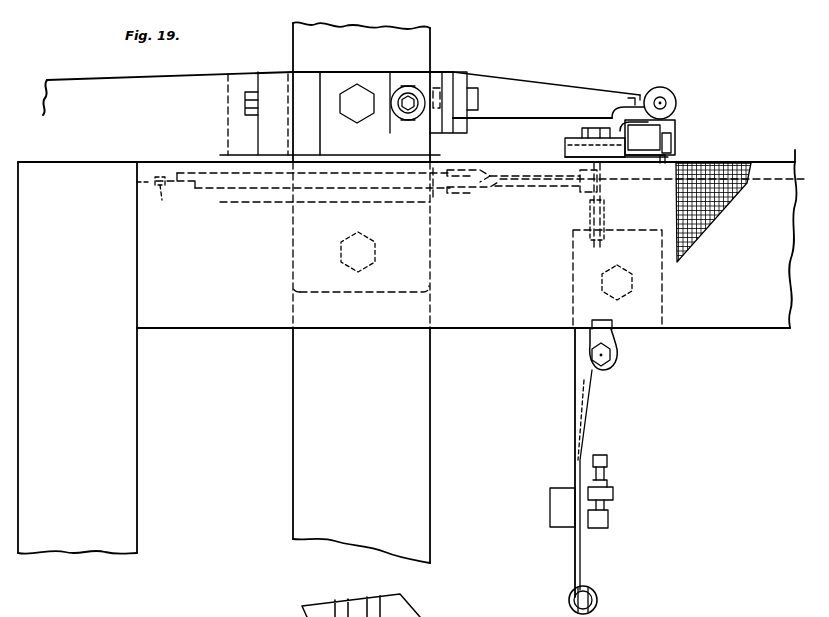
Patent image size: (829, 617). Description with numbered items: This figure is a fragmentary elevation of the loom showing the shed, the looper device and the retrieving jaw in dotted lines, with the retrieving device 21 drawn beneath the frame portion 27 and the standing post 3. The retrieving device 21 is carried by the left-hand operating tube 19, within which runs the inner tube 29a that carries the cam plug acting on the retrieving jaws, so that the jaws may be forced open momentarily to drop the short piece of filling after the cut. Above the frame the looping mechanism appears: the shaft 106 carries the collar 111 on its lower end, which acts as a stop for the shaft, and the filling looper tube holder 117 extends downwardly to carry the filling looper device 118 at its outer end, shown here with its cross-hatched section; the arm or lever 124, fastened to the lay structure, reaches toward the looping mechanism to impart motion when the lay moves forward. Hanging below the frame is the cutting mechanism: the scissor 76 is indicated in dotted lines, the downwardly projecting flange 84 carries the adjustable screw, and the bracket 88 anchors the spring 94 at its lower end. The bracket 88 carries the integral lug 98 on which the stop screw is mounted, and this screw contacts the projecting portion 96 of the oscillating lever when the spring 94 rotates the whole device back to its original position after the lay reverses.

The post 3 is at (417, 60).
The lever 124 is at (602, 95).
The collar 111 is at (676, 94).
The shaft 106 is at (667, 103).
The filling looper tube holder 117 is at (670, 160).
The filling looper device 118 is at (718, 158).
The frame 27 is at (778, 172).
The inner tube 29a is at (163, 199).
The operating tube 19 is at (197, 190).
The retrieving device 21 is at (536, 185).
The scissor 76 is at (604, 212).
The downwardly projecting flange 84 is at (620, 346).
The bracket 88 is at (586, 411).
The integral lug 98 is at (610, 488).
The projecting portion 96 is at (608, 517).
The spring 94 is at (598, 595).